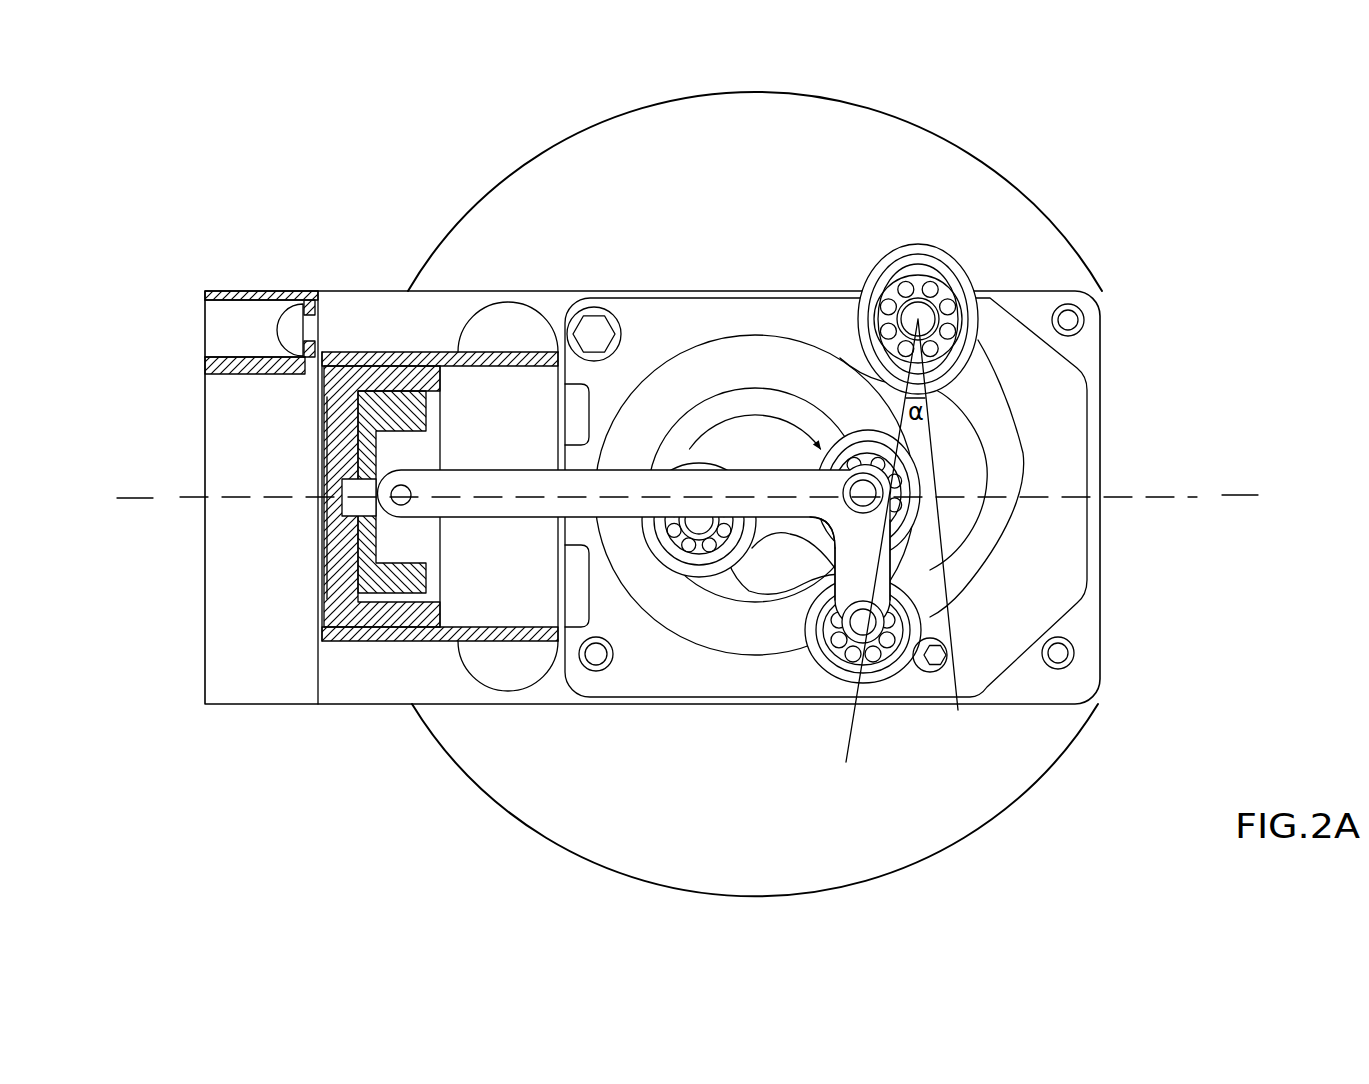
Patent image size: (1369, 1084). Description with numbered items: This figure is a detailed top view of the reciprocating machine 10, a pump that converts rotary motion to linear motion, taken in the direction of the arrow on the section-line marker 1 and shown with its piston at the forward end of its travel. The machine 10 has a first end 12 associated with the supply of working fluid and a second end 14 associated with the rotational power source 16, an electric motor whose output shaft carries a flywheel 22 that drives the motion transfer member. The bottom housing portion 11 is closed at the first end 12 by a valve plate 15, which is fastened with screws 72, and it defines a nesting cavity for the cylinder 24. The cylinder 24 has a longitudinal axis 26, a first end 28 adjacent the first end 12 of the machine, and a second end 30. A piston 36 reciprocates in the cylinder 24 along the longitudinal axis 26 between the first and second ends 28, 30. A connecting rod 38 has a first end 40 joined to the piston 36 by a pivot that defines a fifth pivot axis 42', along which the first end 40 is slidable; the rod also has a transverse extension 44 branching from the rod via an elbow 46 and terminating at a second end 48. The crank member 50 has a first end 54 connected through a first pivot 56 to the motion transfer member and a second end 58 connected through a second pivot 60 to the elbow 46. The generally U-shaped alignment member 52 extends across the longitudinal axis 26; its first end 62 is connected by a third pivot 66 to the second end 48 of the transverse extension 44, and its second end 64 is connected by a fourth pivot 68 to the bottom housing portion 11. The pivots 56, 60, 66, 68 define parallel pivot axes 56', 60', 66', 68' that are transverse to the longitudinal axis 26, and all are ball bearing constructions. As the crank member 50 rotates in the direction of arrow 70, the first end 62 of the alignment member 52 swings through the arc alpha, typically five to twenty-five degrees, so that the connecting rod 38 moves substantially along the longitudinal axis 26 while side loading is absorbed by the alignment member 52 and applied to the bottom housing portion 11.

The reciprocating machine 10 is at (1228, 222).
The bottom housing portion 11 is at (1040, 292).
The first end 12 is at (226, 740).
The second end 14 is at (1217, 409).
The valve plate 15 is at (228, 620).
The rotational power source 16 is at (693, 140).
The flywheel 22 is at (863, 645).
The cylinder 24 is at (440, 638).
The longitudinal axis 26 is at (187, 497).
The first end of cylinder 28 is at (331, 723).
The second end of cylinder 30 is at (548, 655).
The piston 36 is at (402, 522).
The connecting rod 38 is at (682, 573).
The first end of connecting rod 40 is at (509, 518).
The fifth pivot axis 42' is at (392, 384).
The transverse extension 44 is at (888, 619).
The elbow 46 is at (858, 534).
The second end of transverse extension 48 is at (846, 663).
The crank member 50 is at (771, 468).
The alignment member 52 is at (1085, 310).
The first end of crank member 54 is at (699, 530).
The first pivot 56 is at (783, 750).
The first pivot axis 56' is at (795, 730).
The second end of crank member 58 is at (877, 456).
The second pivot 60 is at (1022, 444).
The second pivot axis 60' is at (1015, 493).
The first end of alignment member 62 is at (975, 690).
The second end of alignment member 64 is at (912, 254).
The third pivot 66 is at (971, 757).
The third pivot axis 66' is at (1004, 751).
The fourth pivot 68 is at (976, 272).
The fourth pivot axis 68' is at (978, 237).
The arrow 70 is at (721, 413).
The screws 72 is at (283, 333).
The section line 1 is at (130, 504).